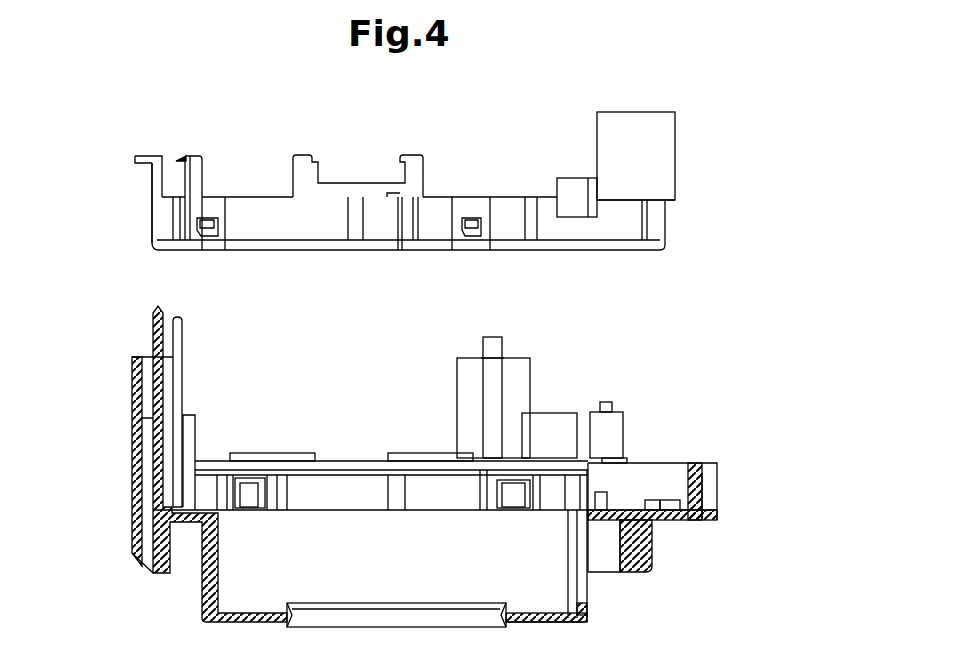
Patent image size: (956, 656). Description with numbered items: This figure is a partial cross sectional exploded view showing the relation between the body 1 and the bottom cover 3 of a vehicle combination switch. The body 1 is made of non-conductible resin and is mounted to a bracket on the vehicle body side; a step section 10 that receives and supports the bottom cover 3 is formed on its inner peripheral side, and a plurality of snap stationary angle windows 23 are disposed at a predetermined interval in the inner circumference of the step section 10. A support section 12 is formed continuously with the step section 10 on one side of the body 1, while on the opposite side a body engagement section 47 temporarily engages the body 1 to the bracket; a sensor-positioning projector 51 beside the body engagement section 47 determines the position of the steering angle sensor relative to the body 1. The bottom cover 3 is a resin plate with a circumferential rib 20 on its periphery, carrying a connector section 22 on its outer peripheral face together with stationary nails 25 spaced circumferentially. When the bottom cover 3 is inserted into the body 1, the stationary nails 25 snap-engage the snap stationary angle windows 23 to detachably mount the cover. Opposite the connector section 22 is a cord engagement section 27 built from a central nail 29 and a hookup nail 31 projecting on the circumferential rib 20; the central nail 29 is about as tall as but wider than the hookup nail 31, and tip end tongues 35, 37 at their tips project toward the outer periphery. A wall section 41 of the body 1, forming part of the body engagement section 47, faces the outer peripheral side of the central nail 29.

The body 1 is at (370, 455).
The bottom cover 3 is at (490, 196).
The step section 10 is at (205, 508).
The support section 12 is at (635, 505).
The circumferential rib 20 is at (270, 197).
The connector section 22 is at (628, 112).
The snap stationary angle window 23 is at (248, 496).
The stationary nail 25 is at (205, 237).
The cord engagement section 27 is at (152, 149).
The central nail 29 is at (148, 182).
The hookup nail 31 is at (200, 158).
The tip end tongue 35 is at (137, 157).
The tip end tongue 37 is at (178, 157).
The wall section 41 is at (181, 430).
The body engagement section 47 is at (150, 382).
The sensor-positioning projector 51 is at (193, 433).